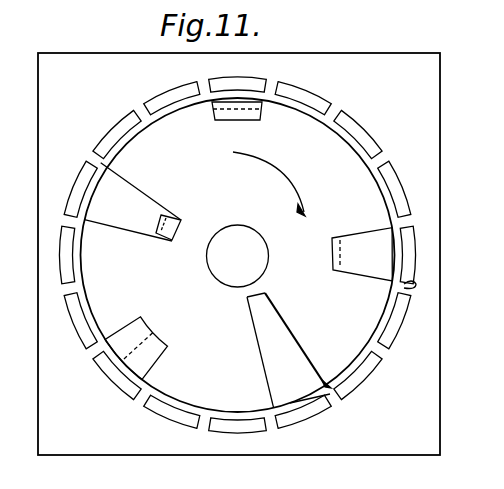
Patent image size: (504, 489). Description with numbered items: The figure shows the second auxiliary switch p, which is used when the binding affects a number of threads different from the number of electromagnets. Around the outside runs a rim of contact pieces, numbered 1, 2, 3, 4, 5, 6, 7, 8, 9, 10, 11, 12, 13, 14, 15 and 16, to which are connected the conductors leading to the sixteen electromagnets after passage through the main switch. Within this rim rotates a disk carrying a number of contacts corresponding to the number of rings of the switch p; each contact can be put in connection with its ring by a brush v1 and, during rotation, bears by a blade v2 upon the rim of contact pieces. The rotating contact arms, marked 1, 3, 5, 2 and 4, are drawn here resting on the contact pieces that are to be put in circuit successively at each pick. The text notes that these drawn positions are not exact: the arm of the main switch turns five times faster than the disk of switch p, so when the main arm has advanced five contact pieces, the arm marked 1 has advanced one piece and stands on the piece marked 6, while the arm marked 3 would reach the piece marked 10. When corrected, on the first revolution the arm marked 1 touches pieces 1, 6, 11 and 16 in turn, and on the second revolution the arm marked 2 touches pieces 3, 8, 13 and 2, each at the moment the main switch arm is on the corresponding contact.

The second auxiliary switch p is at (410, 62).
The contact piece 1 is at (242, 86).
The contact piece 2 is at (76, 183).
The contact piece 3 is at (112, 380).
The contact piece 4 is at (217, 296).
The contact piece 5 is at (414, 253).
The contact piece 6 is at (316, 98).
The contact piece 7 is at (117, 128).
The contact piece 8 is at (78, 330).
The contact piece 9 is at (240, 430).
The contact piece 10 is at (398, 322).
The contact piece 11 is at (364, 138).
The contact piece 12 is at (172, 94).
The contact piece 13 is at (57, 266).
The contact piece 14 is at (168, 420).
The contact piece 15 is at (365, 381).
The contact piece 16 is at (397, 181).
The brush v1 is at (181, 220).
The blade v2 is at (93, 193).